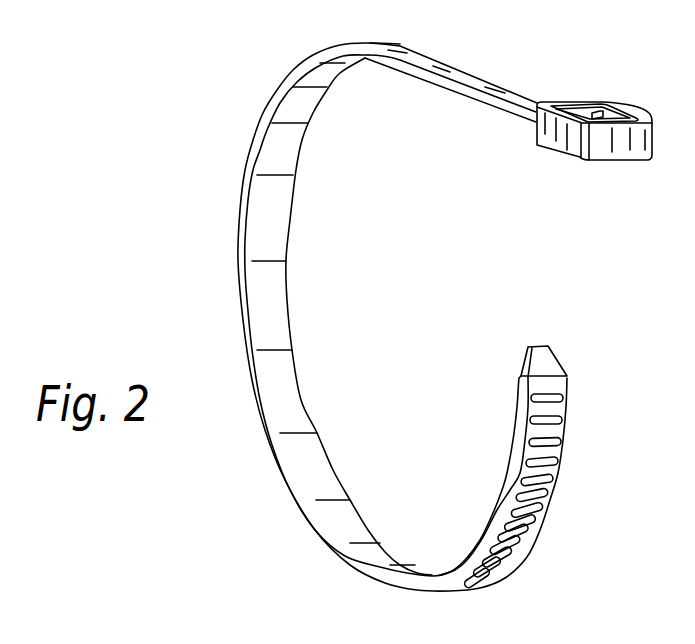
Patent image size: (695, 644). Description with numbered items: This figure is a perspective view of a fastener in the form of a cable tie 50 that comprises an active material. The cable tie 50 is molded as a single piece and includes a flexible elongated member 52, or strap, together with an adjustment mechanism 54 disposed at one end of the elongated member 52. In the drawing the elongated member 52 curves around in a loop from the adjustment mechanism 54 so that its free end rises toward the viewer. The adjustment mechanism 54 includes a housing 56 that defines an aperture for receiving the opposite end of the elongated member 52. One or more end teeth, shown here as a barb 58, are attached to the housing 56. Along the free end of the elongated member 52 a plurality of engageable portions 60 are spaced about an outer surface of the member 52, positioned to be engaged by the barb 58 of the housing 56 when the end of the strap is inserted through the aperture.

The cable tie 50 is at (210, 138).
The flexible elongated member 52 is at (276, 450).
The adjustment mechanism 54 is at (512, 160).
The housing 56 is at (580, 110).
The barb 58 is at (600, 115).
The engageable portions 60 is at (548, 487).